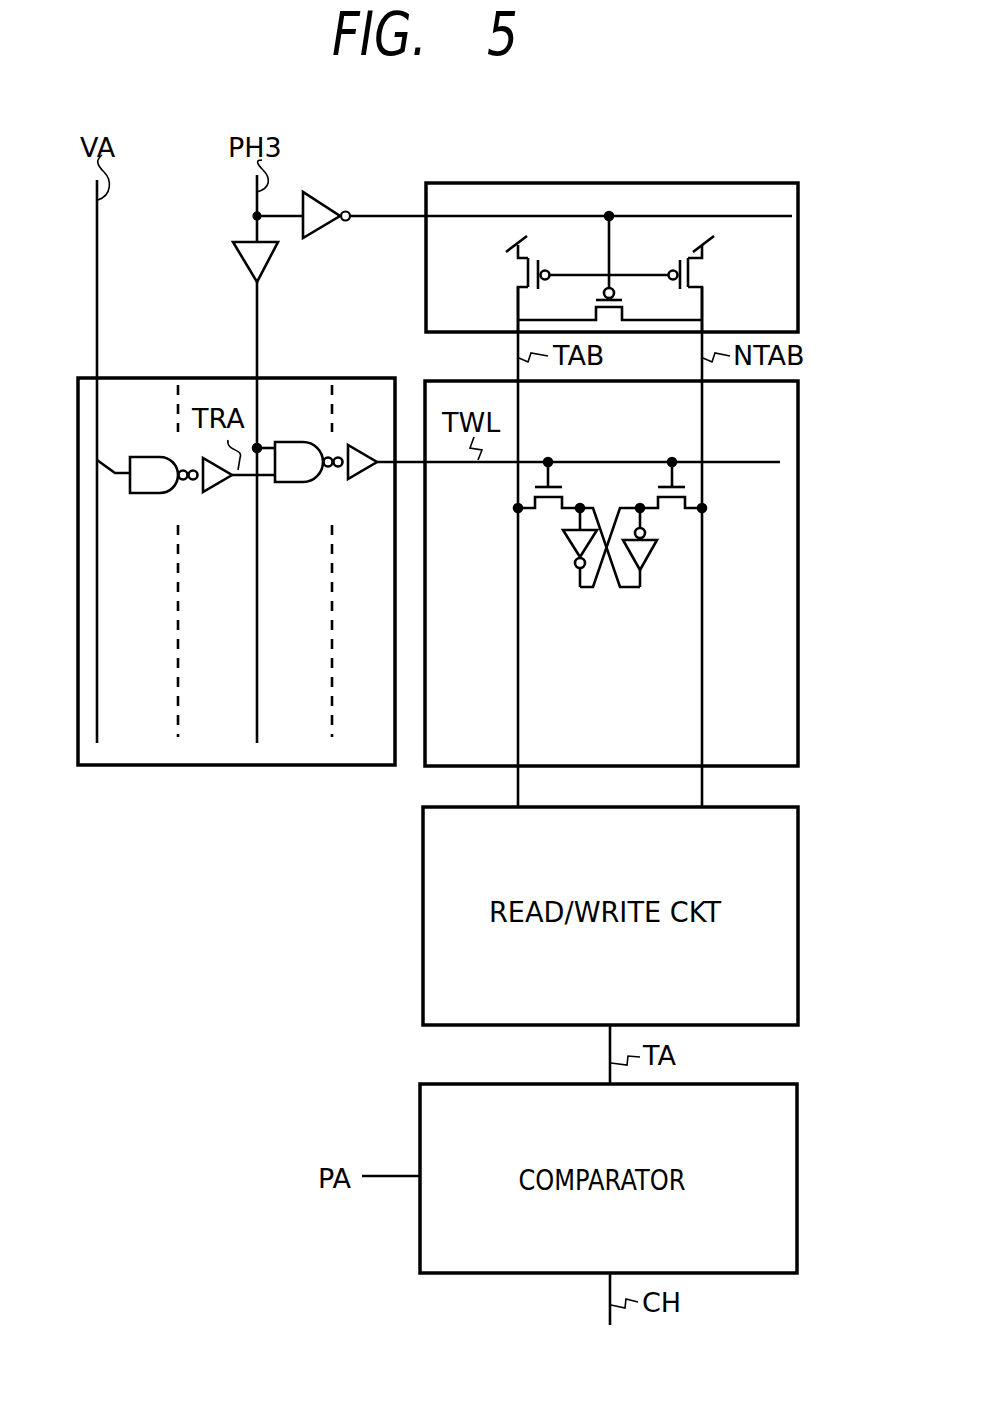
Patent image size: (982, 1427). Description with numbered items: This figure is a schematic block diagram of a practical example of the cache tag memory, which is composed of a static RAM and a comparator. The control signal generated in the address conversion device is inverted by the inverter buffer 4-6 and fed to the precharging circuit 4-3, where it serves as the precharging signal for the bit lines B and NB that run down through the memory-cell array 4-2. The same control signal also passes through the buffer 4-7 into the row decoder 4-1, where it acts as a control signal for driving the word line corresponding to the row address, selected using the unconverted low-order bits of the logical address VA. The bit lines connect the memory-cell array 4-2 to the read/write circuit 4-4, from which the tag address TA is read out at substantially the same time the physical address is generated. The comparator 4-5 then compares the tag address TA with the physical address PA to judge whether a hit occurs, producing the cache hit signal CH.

The row decoder 4-1 is at (367, 378).
The memory-cell array 4-2 is at (798, 420).
The precharging circuit 4-3 is at (769, 183).
The read/write circuit 4-4 is at (798, 852).
The comparator 4-5 is at (797, 1130).
The inverter buffer 4-6 is at (326, 201).
The buffer 4-7 is at (268, 257).